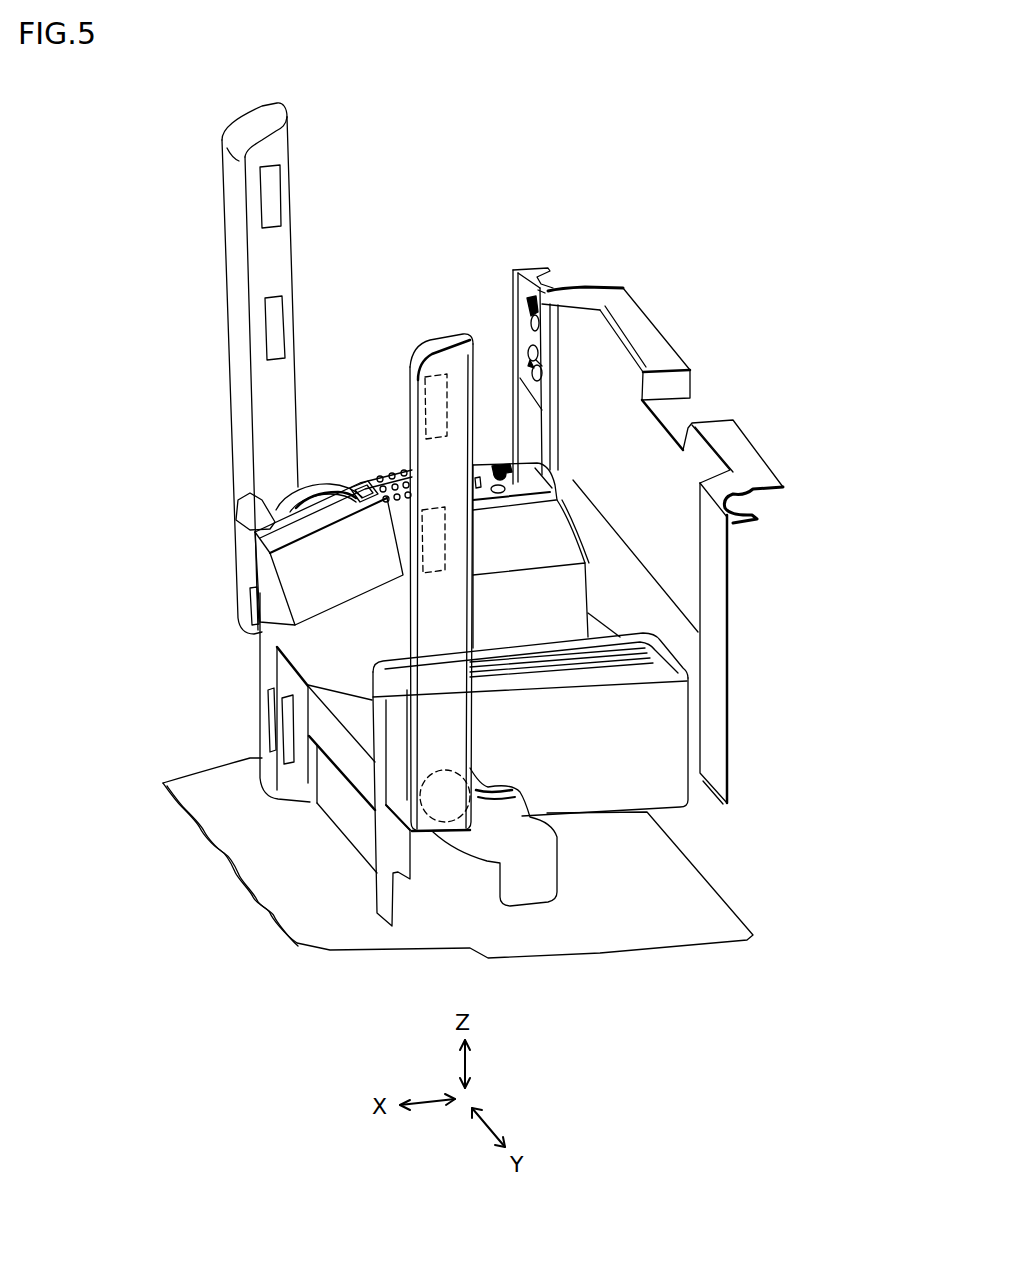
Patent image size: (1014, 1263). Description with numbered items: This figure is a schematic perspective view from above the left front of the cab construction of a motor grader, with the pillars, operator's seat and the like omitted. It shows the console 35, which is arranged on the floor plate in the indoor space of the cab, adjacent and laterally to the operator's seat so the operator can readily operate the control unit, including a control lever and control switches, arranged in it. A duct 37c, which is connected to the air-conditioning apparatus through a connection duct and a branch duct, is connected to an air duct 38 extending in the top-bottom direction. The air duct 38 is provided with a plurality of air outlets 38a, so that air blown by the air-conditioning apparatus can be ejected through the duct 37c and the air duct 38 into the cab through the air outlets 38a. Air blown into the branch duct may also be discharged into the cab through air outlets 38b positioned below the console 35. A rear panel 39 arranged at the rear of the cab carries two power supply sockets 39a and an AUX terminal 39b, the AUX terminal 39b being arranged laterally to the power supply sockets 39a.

The console 35 is at (521, 484).
The duct 37c is at (547, 873).
The air duct 38 is at (253, 127).
The air outlets 38a is at (260, 197).
The air outlets 38b is at (280, 737).
The rear panel 39 is at (610, 287).
The power supply sockets 39a is at (540, 363).
The AUX terminal 39b is at (492, 305).